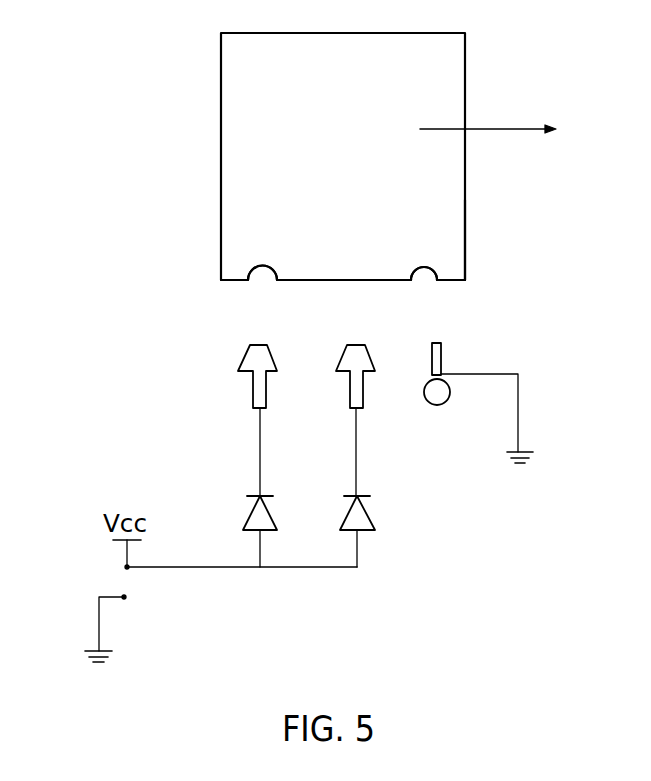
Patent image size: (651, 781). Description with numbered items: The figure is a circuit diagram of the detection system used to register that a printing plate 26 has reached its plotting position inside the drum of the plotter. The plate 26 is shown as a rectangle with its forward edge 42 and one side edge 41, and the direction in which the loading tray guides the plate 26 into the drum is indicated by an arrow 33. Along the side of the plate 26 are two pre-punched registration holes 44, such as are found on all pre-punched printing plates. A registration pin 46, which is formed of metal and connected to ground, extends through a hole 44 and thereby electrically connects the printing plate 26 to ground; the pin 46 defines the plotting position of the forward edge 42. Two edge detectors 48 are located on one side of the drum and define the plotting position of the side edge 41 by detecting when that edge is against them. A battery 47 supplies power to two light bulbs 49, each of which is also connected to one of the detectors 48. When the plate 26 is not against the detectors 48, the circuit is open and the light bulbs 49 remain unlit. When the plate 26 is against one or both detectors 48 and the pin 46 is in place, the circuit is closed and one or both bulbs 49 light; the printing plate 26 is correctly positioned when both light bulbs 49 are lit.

The printing plate 26 is at (457, 62).
The arrows 33 is at (486, 131).
The side edge 41 is at (350, 281).
The forward edge 42 is at (460, 240).
The registration hole 44 is at (267, 268).
The registration pin 46 is at (441, 361).
The battery 47 is at (100, 583).
The edge detectors 48 is at (347, 388).
The light bulbs 49 is at (270, 531).